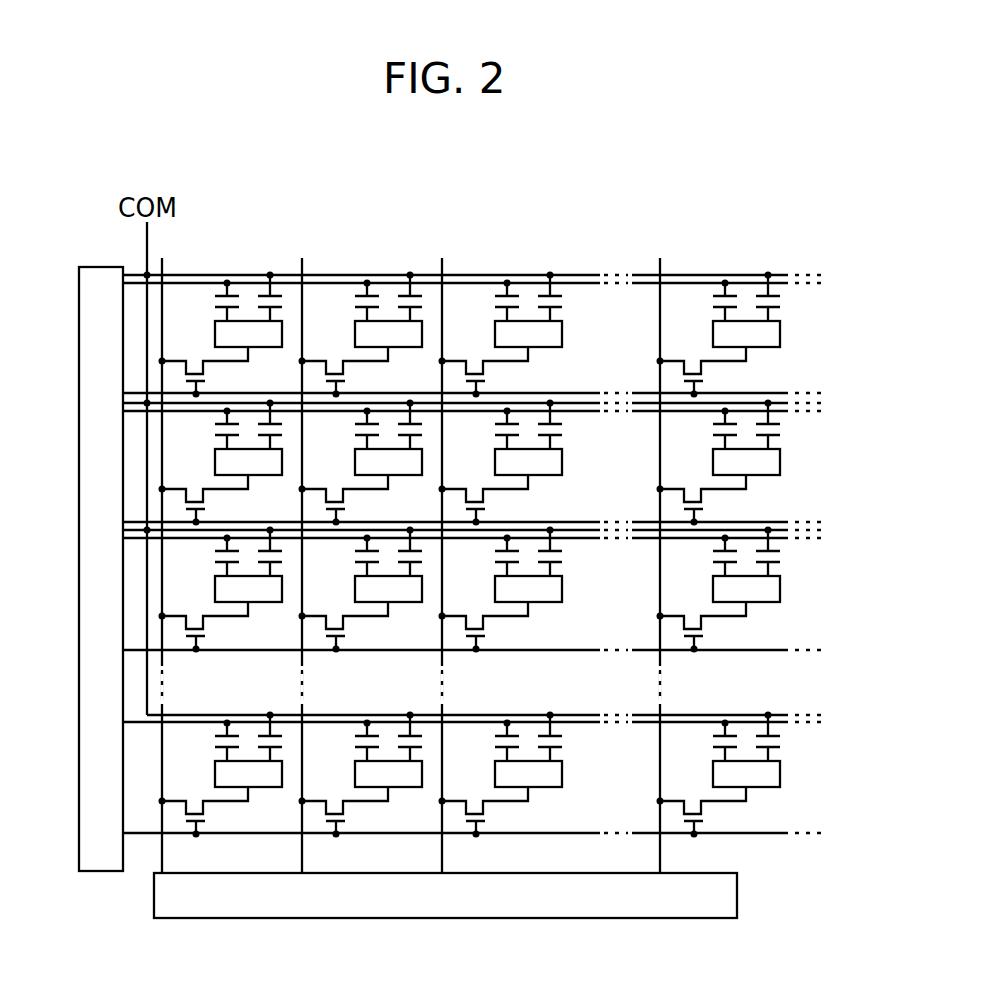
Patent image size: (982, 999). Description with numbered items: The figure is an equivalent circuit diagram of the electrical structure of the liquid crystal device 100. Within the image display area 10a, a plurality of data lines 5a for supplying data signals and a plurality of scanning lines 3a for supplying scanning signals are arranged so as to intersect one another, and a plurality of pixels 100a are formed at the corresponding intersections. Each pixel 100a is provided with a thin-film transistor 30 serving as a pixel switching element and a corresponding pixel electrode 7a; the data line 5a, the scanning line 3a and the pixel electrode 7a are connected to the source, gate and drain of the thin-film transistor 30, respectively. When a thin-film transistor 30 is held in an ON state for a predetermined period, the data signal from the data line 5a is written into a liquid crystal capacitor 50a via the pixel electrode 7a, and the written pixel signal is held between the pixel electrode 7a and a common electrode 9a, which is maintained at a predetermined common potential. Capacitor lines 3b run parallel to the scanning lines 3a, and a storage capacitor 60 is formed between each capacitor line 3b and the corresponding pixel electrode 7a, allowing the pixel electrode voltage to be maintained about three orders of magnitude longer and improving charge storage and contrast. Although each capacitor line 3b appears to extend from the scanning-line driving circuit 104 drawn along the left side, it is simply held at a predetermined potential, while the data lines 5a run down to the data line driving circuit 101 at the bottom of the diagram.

The liquid crystal device 100 is at (530, 251).
The pixel 100a is at (264, 288).
The liquid crystal capacitor 50a is at (285, 303).
The storage capacitor 60 is at (213, 303).
The pixel electrode 7a is at (268, 347).
The thin-film transistor 30 is at (207, 366).
The data line 5a is at (163, 259).
The common electrode 9a is at (355, 273).
The capacitor line 3b is at (582, 284).
The scanning line 3a is at (788, 393).
The image display area 10a is at (761, 257).
The data line driving circuit 101 is at (159, 903).
The scanning-line driving circuit 104 is at (89, 837).